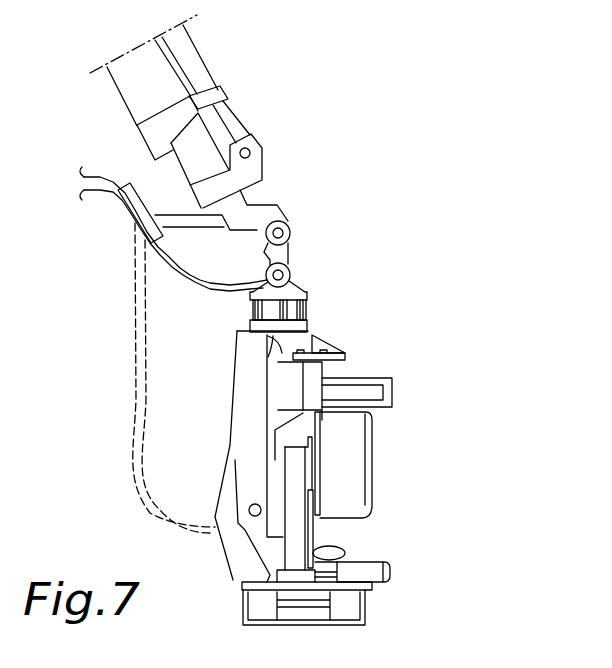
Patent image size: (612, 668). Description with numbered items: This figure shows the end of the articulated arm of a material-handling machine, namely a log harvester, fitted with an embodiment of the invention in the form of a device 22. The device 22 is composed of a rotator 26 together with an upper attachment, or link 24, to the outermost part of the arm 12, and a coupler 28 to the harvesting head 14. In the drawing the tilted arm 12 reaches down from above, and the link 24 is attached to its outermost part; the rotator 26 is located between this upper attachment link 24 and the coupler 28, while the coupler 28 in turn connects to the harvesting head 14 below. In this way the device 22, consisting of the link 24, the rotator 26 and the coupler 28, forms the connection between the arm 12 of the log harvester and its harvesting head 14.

The arm 12 is at (193, 55).
The harvesting head 14 is at (380, 468).
The device 22 is at (452, 236).
The upper attachment (link) 24 is at (302, 251).
The rotator 26 is at (312, 286).
The coupler 28 is at (250, 322).